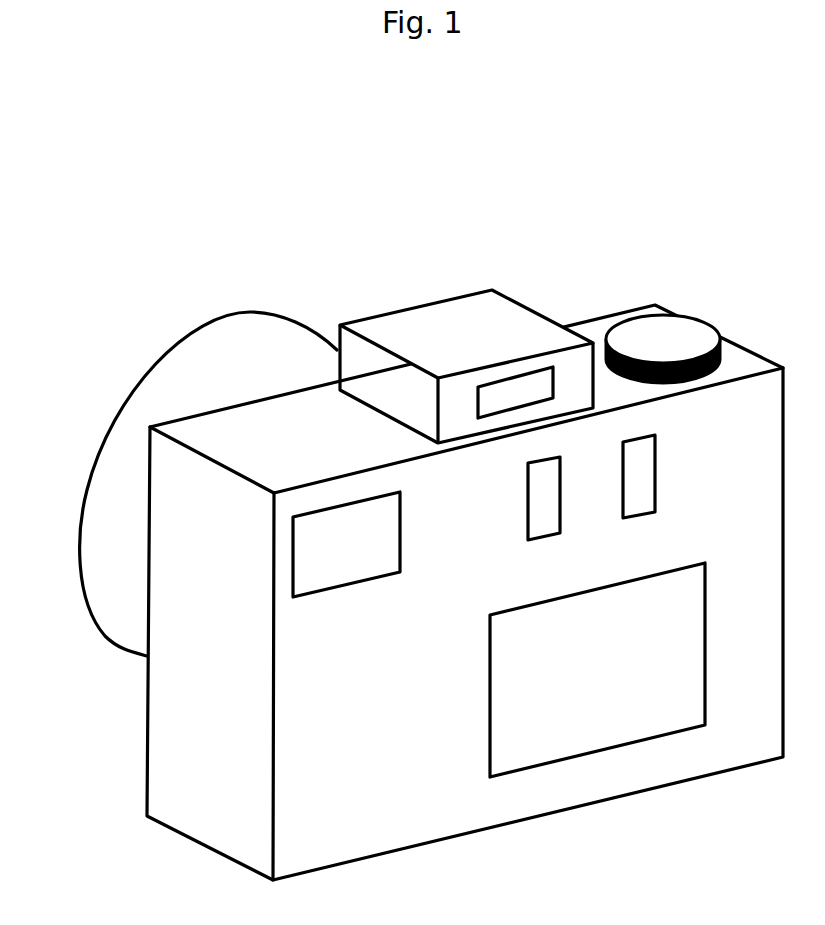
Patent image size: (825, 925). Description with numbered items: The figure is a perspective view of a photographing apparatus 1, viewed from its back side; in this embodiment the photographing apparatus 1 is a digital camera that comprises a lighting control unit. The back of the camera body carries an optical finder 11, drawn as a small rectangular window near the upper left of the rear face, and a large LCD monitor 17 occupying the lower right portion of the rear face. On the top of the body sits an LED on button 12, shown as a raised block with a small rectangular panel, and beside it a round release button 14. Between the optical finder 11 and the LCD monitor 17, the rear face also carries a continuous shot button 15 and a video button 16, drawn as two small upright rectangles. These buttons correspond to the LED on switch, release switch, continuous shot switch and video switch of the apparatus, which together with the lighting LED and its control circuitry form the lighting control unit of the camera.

The photographing apparatus 1 is at (655, 308).
The optical finder 11 is at (402, 527).
The LED on button 12 is at (493, 382).
The release button 14 is at (695, 317).
The continuous shot button 15 is at (657, 473).
The video button 16 is at (562, 497).
The LCD monitor 17 is at (707, 588).